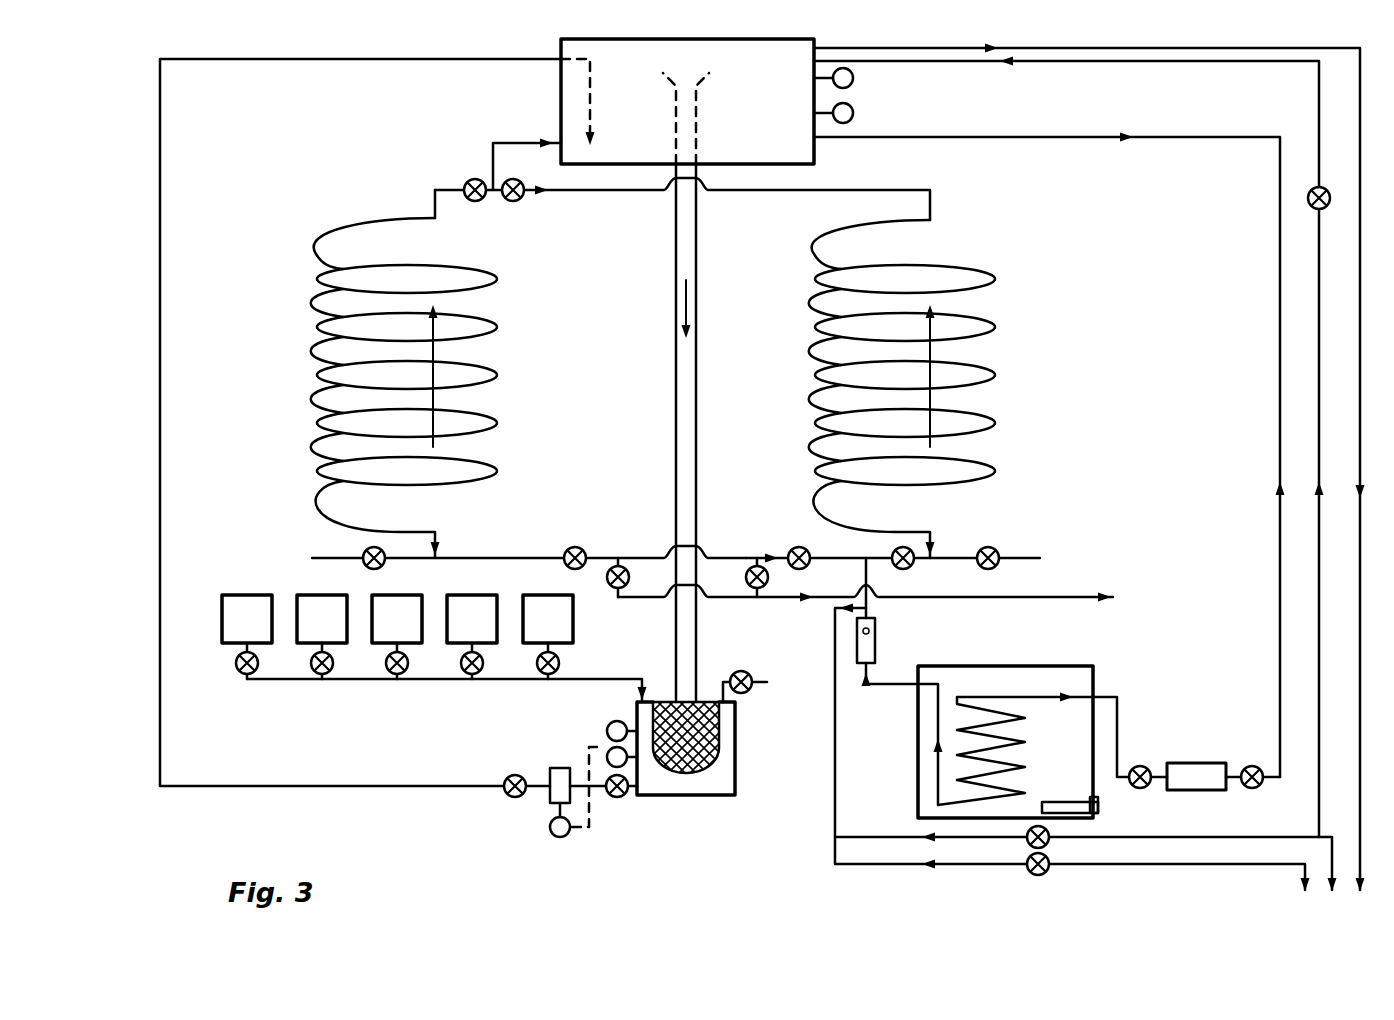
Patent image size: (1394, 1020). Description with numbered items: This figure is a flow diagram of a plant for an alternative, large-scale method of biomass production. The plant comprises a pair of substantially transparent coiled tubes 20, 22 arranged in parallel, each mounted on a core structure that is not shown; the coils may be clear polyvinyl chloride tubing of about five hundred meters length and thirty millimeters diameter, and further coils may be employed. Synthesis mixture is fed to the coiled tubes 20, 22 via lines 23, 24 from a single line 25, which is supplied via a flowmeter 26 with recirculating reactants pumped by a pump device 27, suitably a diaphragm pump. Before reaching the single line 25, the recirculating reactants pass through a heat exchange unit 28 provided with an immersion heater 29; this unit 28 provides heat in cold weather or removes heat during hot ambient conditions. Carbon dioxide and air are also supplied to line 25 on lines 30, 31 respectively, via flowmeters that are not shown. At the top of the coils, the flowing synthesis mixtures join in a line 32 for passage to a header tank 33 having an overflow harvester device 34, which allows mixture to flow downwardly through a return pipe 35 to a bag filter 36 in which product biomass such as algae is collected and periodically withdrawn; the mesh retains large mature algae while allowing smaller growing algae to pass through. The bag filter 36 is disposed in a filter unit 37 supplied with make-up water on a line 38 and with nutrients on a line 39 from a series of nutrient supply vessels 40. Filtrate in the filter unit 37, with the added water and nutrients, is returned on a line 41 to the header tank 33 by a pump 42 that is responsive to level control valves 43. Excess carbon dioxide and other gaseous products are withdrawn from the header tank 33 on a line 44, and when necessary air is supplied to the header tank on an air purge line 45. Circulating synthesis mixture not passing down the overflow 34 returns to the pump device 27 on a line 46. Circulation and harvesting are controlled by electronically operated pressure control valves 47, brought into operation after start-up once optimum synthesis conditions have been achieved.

The coiled tube 20 is at (497, 418).
The coiled tube 22 is at (996, 420).
The line 23 is at (502, 558).
The line 24 is at (819, 558).
The single line 25 is at (868, 596).
The flowmeter 26 is at (876, 648).
The pump device 27 is at (1190, 768).
The heat exchange unit 28 is at (1045, 666).
The immersion heater 29 is at (1092, 797).
The line 30 is at (1205, 864).
The line 31 is at (1265, 837).
The line 32 is at (514, 143).
The header tank 33 is at (814, 150).
The overflow harvester device 34 is at (703, 88).
The return pipe 35 is at (696, 405).
The bag filter 36 is at (713, 742).
The filter unit 37 is at (735, 775).
The line 38 is at (767, 682).
The line 39 is at (618, 680).
The nutrient supply vessels 40 is at (305, 610).
The line 41 is at (160, 668).
The pump 42 is at (552, 772).
The level control valves 43 is at (608, 757).
The line 44 is at (1060, 48).
The air purge line 45 is at (1106, 61).
The line 46 is at (1199, 137).
The pressure control valves 47 is at (853, 111).